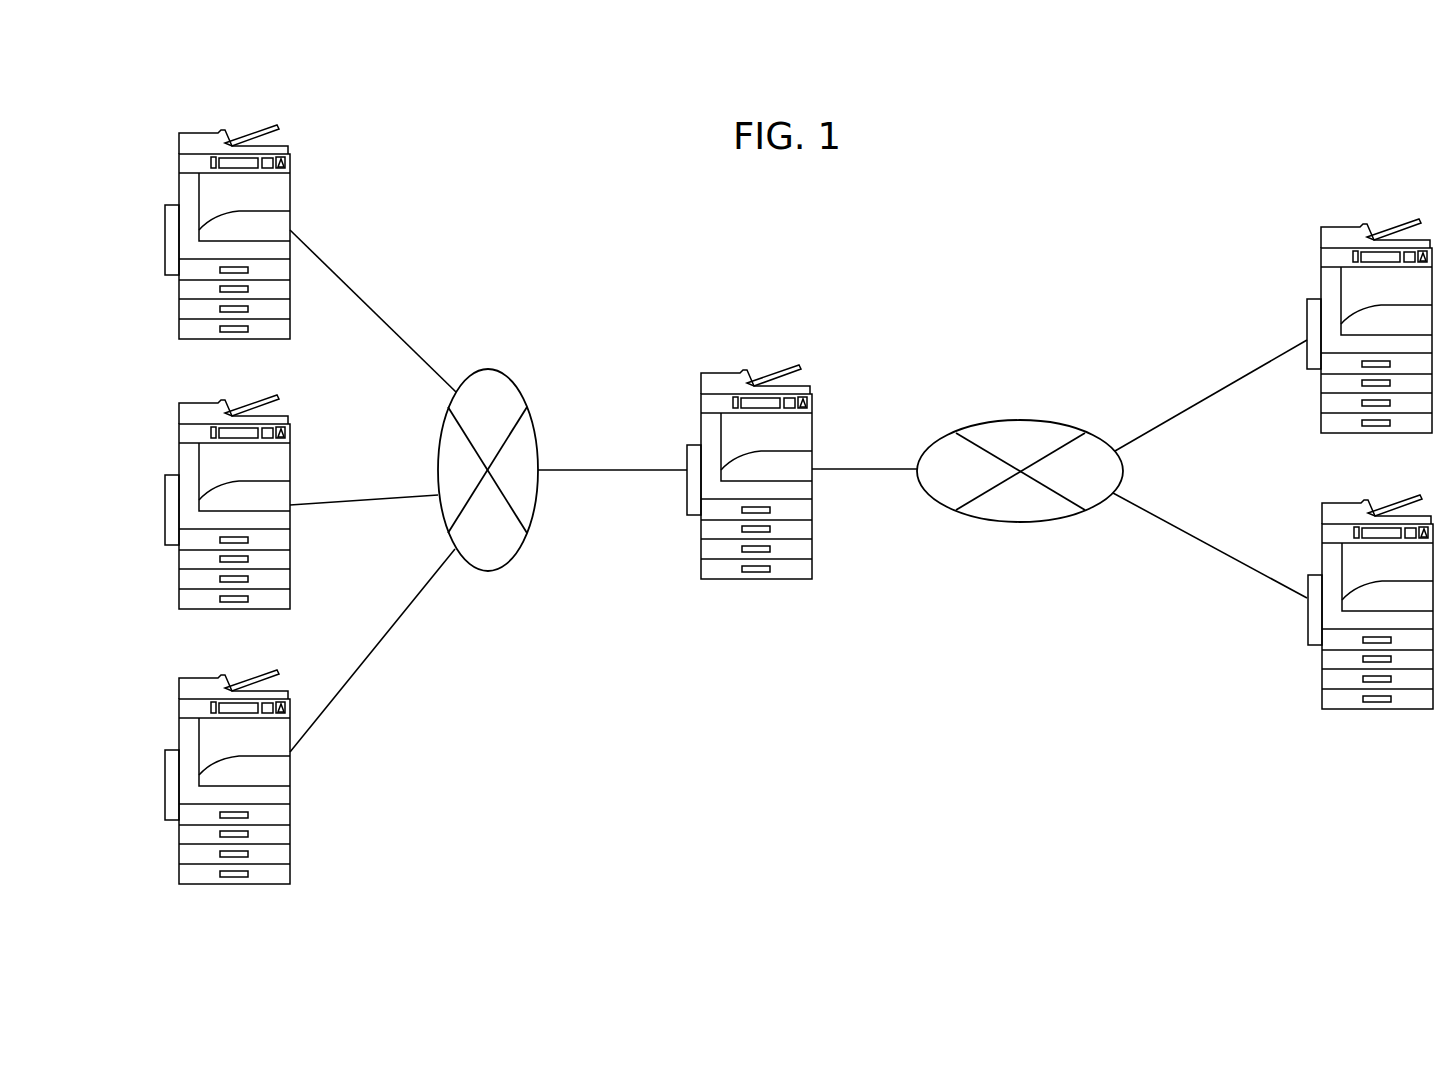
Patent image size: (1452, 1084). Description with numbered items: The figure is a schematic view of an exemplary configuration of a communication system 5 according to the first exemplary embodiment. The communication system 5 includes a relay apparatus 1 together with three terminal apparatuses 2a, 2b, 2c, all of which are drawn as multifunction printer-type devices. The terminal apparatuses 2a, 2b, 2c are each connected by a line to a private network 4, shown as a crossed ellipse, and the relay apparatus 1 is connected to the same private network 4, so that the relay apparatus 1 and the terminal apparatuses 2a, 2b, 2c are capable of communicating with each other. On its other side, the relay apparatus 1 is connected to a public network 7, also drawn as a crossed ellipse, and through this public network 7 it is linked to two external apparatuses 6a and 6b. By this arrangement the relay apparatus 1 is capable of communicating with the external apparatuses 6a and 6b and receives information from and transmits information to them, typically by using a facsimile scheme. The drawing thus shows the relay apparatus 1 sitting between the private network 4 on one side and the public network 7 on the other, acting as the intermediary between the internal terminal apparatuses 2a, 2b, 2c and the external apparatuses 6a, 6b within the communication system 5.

The relay apparatus 1 is at (701, 380).
The terminal apparatus 2a is at (179, 139).
The terminal apparatus 2b is at (179, 409).
The terminal apparatus 2c is at (179, 684).
The private network 4 is at (497, 369).
The communication system 5 is at (1138, 221).
The external apparatus 6a is at (1321, 235).
The external apparatus 6b is at (1322, 511).
The public network 7 is at (1052, 421).